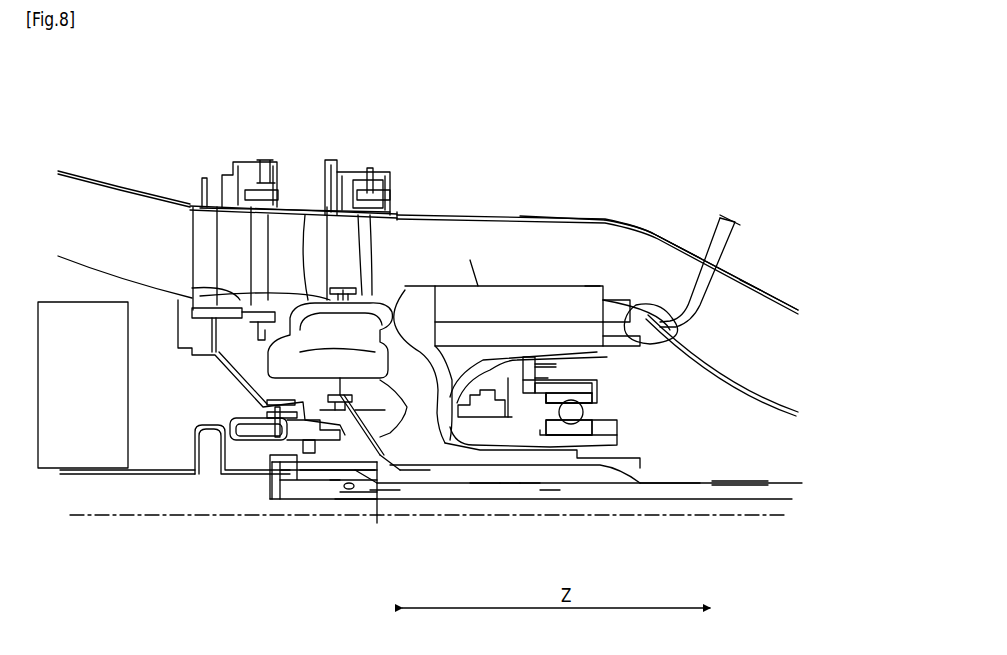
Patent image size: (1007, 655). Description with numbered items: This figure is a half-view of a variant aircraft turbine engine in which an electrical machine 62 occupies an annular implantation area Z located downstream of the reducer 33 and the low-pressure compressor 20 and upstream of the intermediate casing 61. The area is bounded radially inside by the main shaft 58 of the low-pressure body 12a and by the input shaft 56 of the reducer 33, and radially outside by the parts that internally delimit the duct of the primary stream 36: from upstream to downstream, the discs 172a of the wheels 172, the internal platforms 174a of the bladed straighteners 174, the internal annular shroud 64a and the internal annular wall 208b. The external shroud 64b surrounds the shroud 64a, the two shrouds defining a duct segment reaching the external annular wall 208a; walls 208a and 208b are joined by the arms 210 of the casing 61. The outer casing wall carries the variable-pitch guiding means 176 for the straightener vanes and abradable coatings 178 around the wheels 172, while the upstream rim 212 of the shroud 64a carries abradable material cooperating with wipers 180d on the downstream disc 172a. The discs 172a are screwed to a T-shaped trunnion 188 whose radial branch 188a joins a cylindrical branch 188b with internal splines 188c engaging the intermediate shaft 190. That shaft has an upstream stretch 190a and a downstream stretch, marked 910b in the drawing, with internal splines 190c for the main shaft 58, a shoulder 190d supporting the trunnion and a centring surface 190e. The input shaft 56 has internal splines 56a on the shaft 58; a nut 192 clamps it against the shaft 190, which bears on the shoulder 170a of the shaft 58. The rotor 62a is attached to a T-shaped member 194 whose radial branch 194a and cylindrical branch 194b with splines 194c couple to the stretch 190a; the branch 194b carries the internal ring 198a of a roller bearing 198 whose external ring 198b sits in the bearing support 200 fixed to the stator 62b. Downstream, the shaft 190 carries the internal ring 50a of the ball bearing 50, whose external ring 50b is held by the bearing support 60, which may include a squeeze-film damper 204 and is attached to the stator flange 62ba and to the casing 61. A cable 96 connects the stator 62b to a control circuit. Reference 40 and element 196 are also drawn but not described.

The low-pressure body 12a is at (735, 487).
The low-pressure compressor 20 is at (305, 100).
The reducer 33 is at (52, 478).
The primary stream 36 is at (118, 215).
The nacelle 40 is at (103, 166).
The bearing 50 is at (630, 405).
The internal ring 50a is at (618, 428).
The external ring 50b is at (600, 393).
The input shaft 56 is at (110, 475).
The internal splines 56a is at (350, 485).
The main shaft 58 is at (778, 510).
The bearing support 60 is at (662, 320).
The intermediate casing 61 is at (756, 222).
The electrical machine 62 is at (480, 260).
The rotor 62a is at (575, 320).
The stator 62b is at (545, 286).
The annular flange 62ba is at (640, 255).
The annular shroud 64a is at (485, 288).
The external shroud 64b is at (525, 220).
The electric cable 96 is at (728, 222).
The cylindrical shoulder 170a is at (377, 525).
The wheels 172 is at (287, 222).
The discs 172a is at (330, 333).
The bladed straighteners 174 is at (190, 205).
The internal platforms 174a is at (240, 290).
The means for guiding in rotation and for variable pitch 176 is at (222, 155).
The abradable annular coatings 178 is at (310, 205).
The wipers 180d is at (537, 316).
The trunnion 188 is at (370, 410).
The radial annular branch 188a is at (395, 475).
The cylindrical branch 188b is at (410, 495).
The internal splines 188c is at (430, 475).
The intermediate shaft 190 is at (580, 485).
The upstream stretch 190a is at (278, 460).
The internal splines 190c is at (640, 495).
The cylindrical shoulder 190d is at (620, 458).
The external cylindrical surface 190e is at (468, 490).
The nut 192 is at (300, 500).
The member 194 is at (443, 390).
The radial annular branch 194a is at (528, 364).
The cylindrical branch 194b is at (525, 490).
The internal splines 194c is at (500, 490).
The coupling member 196 is at (275, 458).
The bearing 198 is at (245, 450).
The internal ring 198a is at (330, 480).
The external ring 198b is at (362, 490).
The bearing support 200 is at (240, 392).
The oil film damping system 204 is at (210, 440).
The external annular wall 208a is at (770, 290).
The internal annular wall 208b is at (728, 365).
The arms 210 is at (740, 283).
The cylindrical rim 212 is at (460, 260).
The shaft section 910b is at (545, 495).